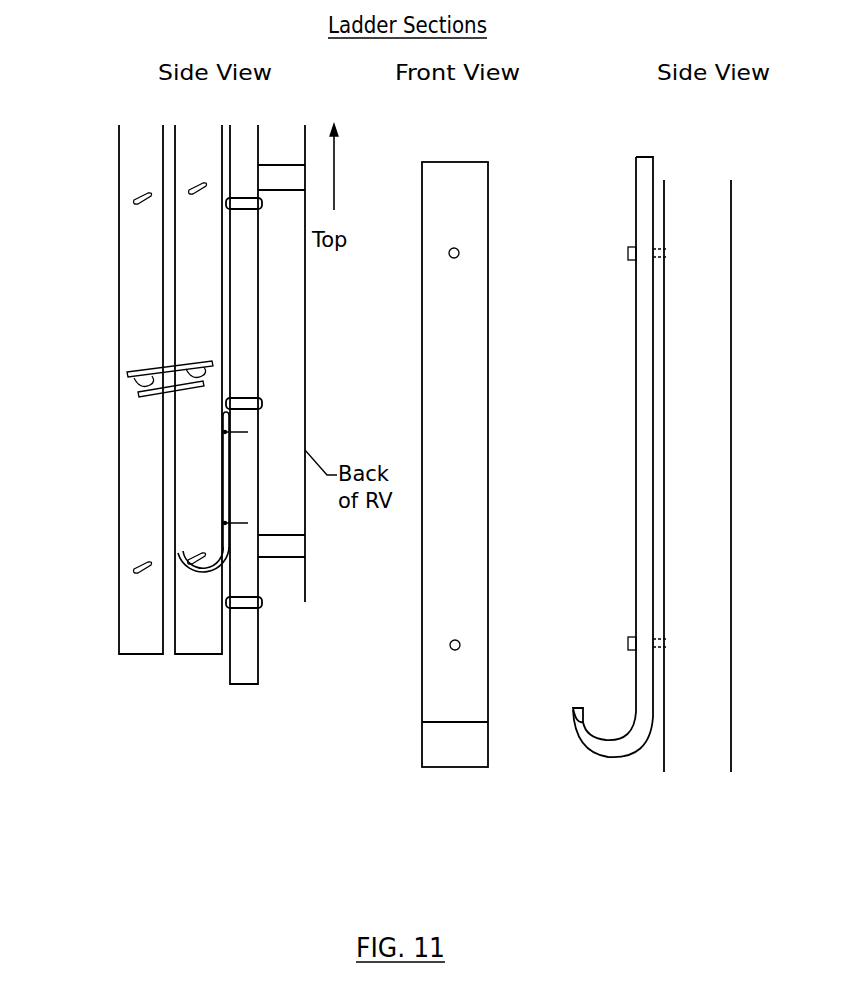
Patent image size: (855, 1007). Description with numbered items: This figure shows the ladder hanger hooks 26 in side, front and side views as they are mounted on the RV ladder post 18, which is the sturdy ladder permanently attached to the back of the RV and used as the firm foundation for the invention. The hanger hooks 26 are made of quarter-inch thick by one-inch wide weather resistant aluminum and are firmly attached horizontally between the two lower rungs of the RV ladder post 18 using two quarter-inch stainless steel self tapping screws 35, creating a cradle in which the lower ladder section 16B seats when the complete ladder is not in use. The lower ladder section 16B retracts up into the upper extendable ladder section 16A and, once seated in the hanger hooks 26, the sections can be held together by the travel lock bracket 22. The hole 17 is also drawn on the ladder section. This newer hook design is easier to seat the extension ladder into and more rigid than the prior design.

The extendable ladder section 16A is at (135, 165).
The lower ladder section 16B is at (193, 220).
The mounting hole 17 is at (133, 572).
The RV ladder post 18 is at (242, 322).
The travel lock bracket 22 is at (140, 395).
The hanger hooks 26 is at (193, 573).
The self tapping screws 35 is at (629, 248).